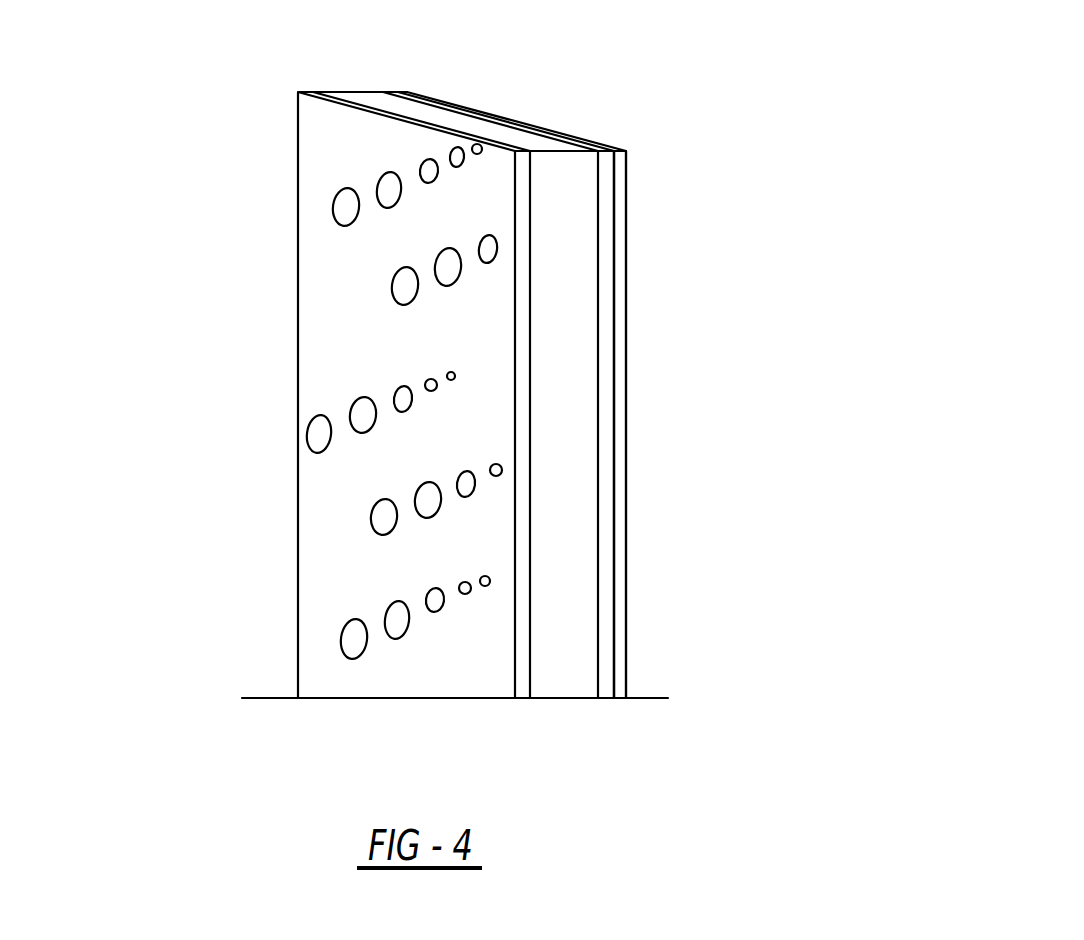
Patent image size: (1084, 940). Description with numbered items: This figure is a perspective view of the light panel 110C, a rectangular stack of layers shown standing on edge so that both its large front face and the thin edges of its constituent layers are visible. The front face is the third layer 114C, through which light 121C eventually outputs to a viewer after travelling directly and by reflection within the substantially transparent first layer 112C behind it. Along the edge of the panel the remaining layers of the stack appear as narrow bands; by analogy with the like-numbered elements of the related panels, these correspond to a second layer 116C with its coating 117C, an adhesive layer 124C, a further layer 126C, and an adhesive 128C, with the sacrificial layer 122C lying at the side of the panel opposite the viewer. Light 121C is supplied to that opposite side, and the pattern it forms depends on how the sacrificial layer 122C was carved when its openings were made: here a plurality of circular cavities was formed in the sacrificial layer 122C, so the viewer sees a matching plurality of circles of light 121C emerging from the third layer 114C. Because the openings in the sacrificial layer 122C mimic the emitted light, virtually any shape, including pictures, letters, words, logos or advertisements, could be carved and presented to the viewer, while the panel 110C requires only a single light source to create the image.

The light panel 110C is at (477, 349).
The first layer 112C is at (565, 197).
The third layer 114C is at (322, 317).
The layer 116C is at (607, 293).
The layer 117C is at (615, 265).
The light 121C is at (453, 152).
The sacrificial layer 122C is at (618, 372).
The first layer 124C is at (530, 175).
The layer 126C is at (598, 237).
The layer 128C is at (615, 322).